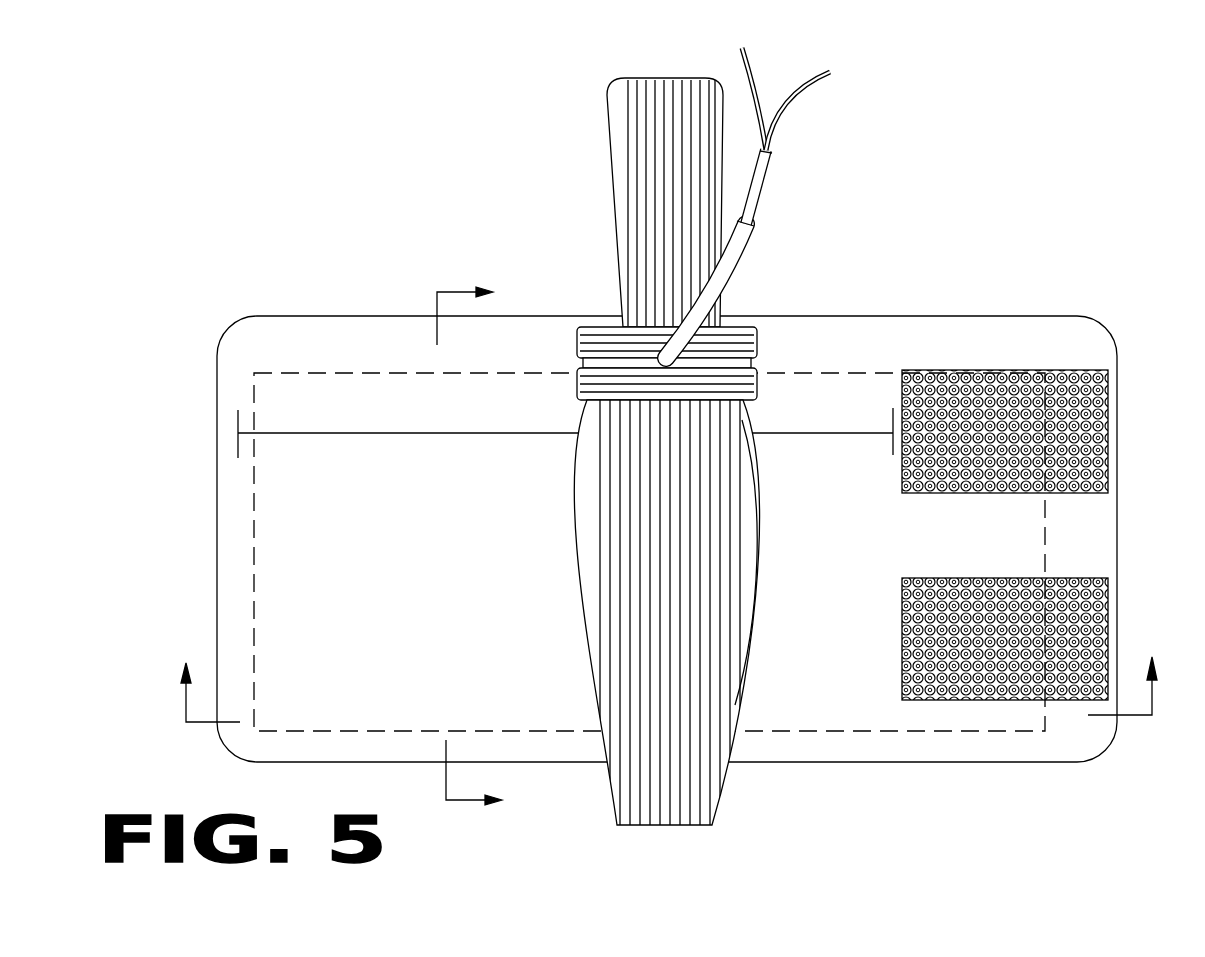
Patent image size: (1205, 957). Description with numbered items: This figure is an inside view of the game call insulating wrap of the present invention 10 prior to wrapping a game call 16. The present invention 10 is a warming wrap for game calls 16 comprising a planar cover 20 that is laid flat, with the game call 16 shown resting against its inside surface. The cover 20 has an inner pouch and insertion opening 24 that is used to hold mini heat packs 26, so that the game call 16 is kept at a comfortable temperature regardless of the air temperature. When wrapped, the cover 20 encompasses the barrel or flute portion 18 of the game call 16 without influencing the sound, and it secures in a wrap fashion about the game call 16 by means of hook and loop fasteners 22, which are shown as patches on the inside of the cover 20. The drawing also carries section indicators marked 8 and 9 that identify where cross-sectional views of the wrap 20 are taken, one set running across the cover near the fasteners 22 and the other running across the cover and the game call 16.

The present invention 10 is at (669, 456).
The game call 16 is at (672, 825).
The barrel or flute portion 18 is at (747, 673).
The planar cover 20 is at (1033, 762).
The hook and loop fasteners 22 is at (977, 585).
The inner pouch and insertion opening 24 is at (415, 433).
The mini heat packs 26 is at (410, 373).
The section line 8- 8 is at (669, 659).
The section line 9- 9 is at (487, 544).